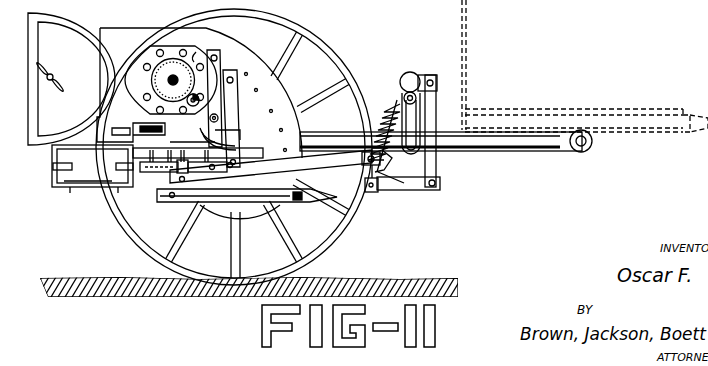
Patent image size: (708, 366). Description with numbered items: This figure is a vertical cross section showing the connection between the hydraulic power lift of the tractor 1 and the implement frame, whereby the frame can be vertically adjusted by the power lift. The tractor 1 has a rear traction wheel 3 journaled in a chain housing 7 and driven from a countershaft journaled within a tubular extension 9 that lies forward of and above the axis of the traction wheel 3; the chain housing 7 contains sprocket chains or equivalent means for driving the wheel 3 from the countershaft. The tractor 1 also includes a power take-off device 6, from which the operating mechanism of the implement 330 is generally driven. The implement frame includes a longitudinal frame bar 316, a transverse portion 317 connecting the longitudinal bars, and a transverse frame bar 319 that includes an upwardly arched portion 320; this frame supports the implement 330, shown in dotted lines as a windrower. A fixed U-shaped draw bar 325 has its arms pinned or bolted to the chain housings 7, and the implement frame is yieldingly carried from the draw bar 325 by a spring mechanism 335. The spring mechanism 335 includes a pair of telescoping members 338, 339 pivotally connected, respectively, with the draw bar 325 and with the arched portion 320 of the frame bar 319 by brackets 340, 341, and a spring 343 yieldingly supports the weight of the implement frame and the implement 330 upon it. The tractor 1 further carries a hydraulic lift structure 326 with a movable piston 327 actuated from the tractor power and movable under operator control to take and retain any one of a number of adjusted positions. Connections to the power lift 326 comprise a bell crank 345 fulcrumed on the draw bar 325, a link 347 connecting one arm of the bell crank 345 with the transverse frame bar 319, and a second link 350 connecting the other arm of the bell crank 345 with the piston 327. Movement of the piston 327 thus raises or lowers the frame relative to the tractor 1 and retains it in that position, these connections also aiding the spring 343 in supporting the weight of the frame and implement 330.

The tractor 1 is at (128, 24).
The rear traction wheel 3 is at (297, 34).
The power take-off device 6 is at (114, 128).
The chain housing 7 is at (250, 100).
The tubular extension 9 is at (197, 53).
The longitudinal frame bar 316 is at (462, 150).
The transverse portion 317 is at (589, 149).
The transverse frame bar 319 is at (398, 98).
The arched portion 320 is at (408, 72).
The draw bar 325 is at (337, 198).
The hydraulic lift structure 326 is at (98, 187).
The piston 327 is at (155, 172).
The implement 330 is at (500, 108).
The spring mechanism 335 is at (398, 162).
The telescoping member 338 is at (367, 163).
The telescoping member 339 is at (397, 115).
The bracket 340 is at (394, 162).
The bracket 341 is at (436, 90).
The spring 343 is at (392, 165).
The bell crank 345 is at (407, 183).
The link 347 is at (428, 115).
The second link 350 is at (290, 166).